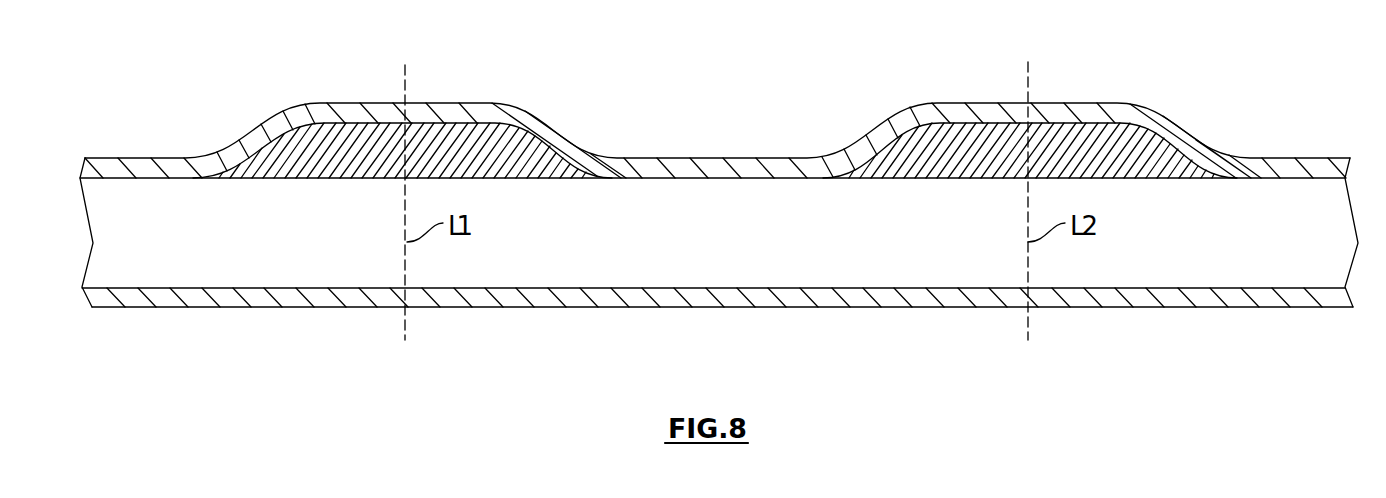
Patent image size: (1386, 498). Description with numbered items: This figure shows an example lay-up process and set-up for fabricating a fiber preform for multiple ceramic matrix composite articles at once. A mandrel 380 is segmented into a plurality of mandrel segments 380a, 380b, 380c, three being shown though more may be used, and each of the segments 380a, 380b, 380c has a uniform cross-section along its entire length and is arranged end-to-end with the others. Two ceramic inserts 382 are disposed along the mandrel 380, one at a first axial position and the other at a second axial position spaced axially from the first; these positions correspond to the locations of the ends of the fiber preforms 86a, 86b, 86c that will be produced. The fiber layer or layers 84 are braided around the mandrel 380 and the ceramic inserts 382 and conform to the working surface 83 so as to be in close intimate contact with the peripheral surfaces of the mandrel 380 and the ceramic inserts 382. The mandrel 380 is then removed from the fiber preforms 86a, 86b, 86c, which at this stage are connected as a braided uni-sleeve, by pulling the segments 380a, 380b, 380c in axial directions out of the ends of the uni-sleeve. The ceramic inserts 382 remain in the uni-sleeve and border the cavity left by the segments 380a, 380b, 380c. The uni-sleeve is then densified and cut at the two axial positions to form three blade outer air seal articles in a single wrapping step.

The mandrel 380 is at (330, 262).
The mandrel segment 380a is at (245, 258).
The mandrel segment 380b is at (617, 260).
The mandrel segment 380c is at (1117, 260).
The ceramic insert 382 is at (442, 143).
The working surface 83 is at (790, 176).
The fiber layer 84 is at (543, 130).
The fiber preform 86a is at (240, 132).
The fiber preform 86b is at (705, 156).
The fiber preform 86c is at (1202, 130).